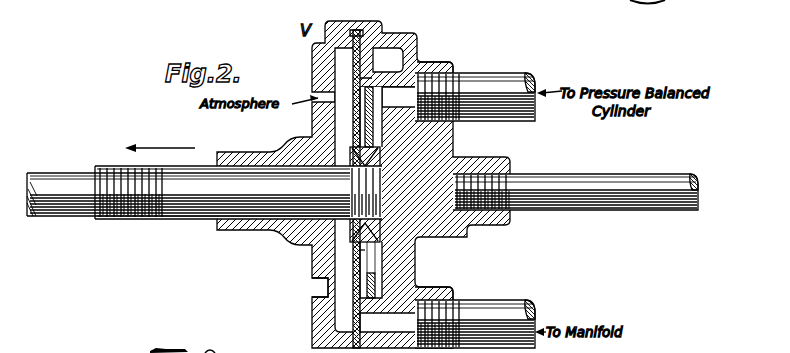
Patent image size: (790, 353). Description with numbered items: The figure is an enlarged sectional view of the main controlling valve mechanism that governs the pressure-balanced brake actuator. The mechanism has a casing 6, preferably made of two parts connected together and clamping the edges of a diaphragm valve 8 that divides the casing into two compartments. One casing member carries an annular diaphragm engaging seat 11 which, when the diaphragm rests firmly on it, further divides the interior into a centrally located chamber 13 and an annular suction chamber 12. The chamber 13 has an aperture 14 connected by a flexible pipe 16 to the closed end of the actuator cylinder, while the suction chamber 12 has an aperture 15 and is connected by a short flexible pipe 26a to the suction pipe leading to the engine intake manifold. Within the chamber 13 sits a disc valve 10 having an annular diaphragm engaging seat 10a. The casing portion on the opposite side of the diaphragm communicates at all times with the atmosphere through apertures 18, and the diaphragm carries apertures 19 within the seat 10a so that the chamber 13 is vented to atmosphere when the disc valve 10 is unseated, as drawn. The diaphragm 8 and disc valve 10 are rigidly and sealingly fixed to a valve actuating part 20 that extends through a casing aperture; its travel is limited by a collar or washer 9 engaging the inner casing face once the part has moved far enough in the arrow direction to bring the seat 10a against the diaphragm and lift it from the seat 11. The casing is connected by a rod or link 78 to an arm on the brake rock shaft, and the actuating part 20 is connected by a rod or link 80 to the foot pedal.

The casing 6 is at (372, 37).
The diaphragm valve 8 is at (356, 307).
The collar or washer 9 is at (350, 155).
The disc valve 10 is at (373, 262).
The annular diaphragm engaging seat 10a is at (374, 286).
The annular diaphragm engaging seat 11 is at (397, 74).
The annular suction chamber 12 is at (385, 56).
The centrally located chamber 13 is at (386, 133).
The aperture 14 is at (450, 68).
The aperture 15 is at (455, 296).
The flexible pipe 16 is at (533, 101).
The apertures 18 is at (328, 284).
The apertures 19 is at (360, 254).
The valve actuating part 20 is at (186, 216).
The short flexible pipe 26a is at (506, 303).
The rod or link 78 is at (575, 176).
The rod or link 80 is at (61, 213).